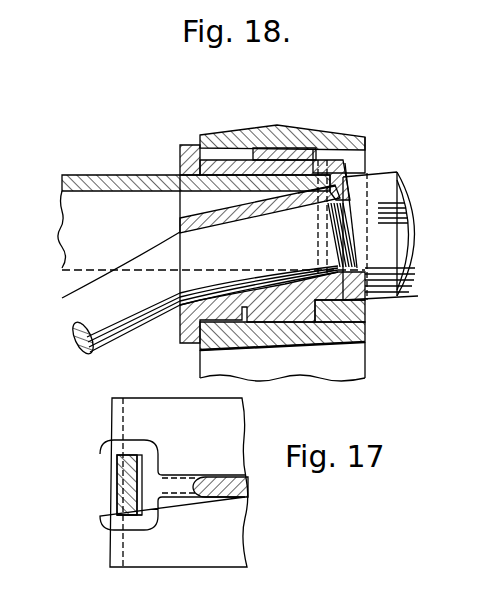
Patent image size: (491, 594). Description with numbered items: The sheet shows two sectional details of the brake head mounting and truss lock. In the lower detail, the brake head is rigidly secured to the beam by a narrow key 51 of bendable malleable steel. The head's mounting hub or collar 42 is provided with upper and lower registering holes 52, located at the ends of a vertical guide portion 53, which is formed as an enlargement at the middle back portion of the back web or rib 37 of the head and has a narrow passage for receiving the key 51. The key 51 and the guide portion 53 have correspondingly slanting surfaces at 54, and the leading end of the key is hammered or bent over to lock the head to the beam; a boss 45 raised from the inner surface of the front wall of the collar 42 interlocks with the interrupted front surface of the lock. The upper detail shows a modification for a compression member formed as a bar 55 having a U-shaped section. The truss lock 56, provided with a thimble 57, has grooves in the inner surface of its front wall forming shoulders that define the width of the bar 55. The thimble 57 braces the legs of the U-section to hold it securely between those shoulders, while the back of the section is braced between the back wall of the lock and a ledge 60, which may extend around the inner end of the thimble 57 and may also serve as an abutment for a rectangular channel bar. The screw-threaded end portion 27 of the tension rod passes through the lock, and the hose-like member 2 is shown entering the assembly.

In FIG. 18, the hose 2 is at (128, 323).
In FIG. 18, the screw-threaded end portion 27 is at (276, 255).
In FIG. 17, the vertical central rib 37 is at (188, 476).
In FIG. 18, the mounting hub 42 is at (343, 137).
In FIG. 17, the mounting hub 42 is at (167, 413).
In FIG. 18, the boss 45 is at (310, 332).
In FIG. 18, the key 51 is at (290, 150).
In FIG. 17, the key 51 is at (117, 462).
In FIG. 17, the registering hole 52 is at (140, 472).
In FIG. 17, the vertical guide portion 53 is at (110, 485).
In FIG. 17, the slanting surface 54 is at (117, 500).
In FIG. 18, the bar 55 is at (96, 175).
In FIG. 18, the truss lock 56 is at (223, 167).
In FIG. 18, the thimble 57 is at (203, 212).
In FIG. 18, the ledge 60 is at (300, 191).